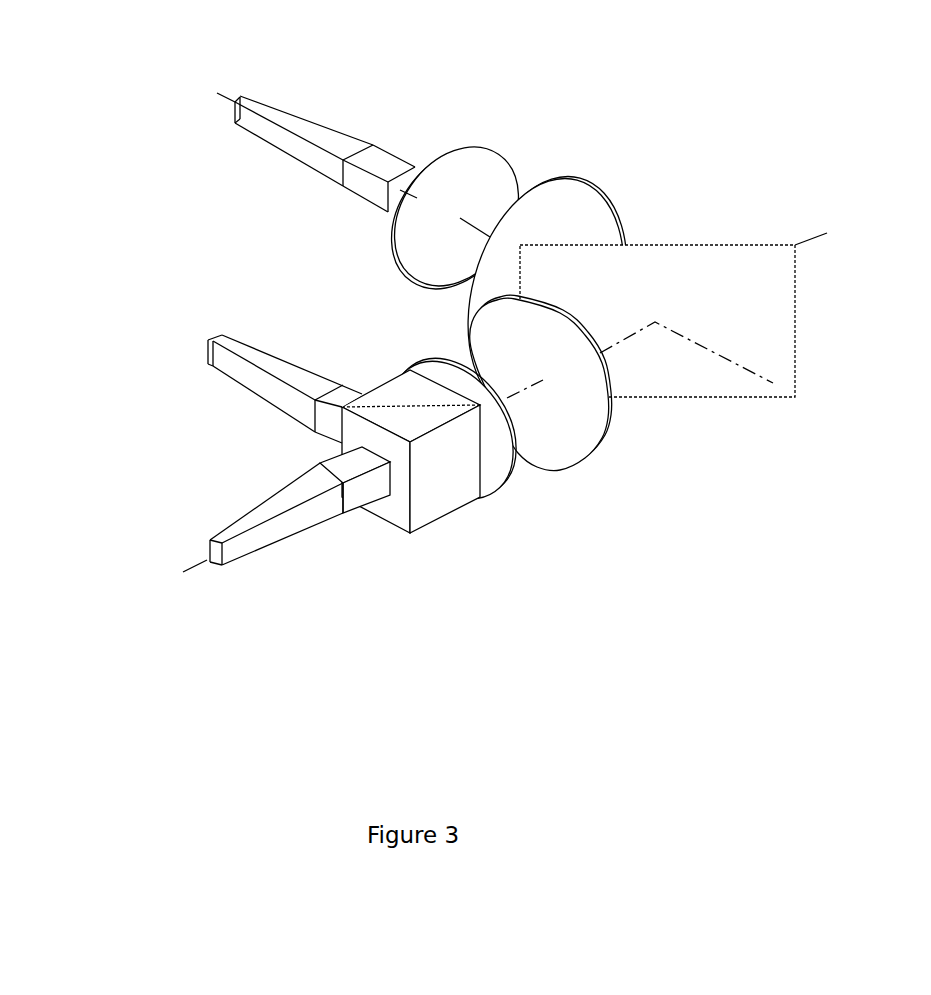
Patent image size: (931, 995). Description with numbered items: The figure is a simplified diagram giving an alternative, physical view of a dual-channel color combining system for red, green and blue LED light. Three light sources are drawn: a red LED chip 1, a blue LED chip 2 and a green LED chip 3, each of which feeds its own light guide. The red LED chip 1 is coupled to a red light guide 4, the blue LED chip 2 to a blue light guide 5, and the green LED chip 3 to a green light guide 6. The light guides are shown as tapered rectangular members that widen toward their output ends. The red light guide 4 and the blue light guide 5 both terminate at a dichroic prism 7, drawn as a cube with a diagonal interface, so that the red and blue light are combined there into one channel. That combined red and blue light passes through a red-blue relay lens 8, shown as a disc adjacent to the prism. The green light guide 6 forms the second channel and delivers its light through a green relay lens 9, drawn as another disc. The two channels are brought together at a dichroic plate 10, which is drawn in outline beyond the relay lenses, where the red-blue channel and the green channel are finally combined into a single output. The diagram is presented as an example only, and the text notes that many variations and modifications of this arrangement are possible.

The red LED chip 1 is at (213, 553).
The blue LED chip 2 is at (210, 348).
The green LED chip 3 is at (236, 100).
The red light guide 4 is at (282, 533).
The blue light guide 5 is at (263, 383).
The green light guide 6 is at (298, 136).
The dichroic prism 7 is at (442, 467).
The red-blue relay lens 8 is at (528, 465).
The green relay lens 9 is at (530, 170).
The dichroic plate 10 is at (680, 353).